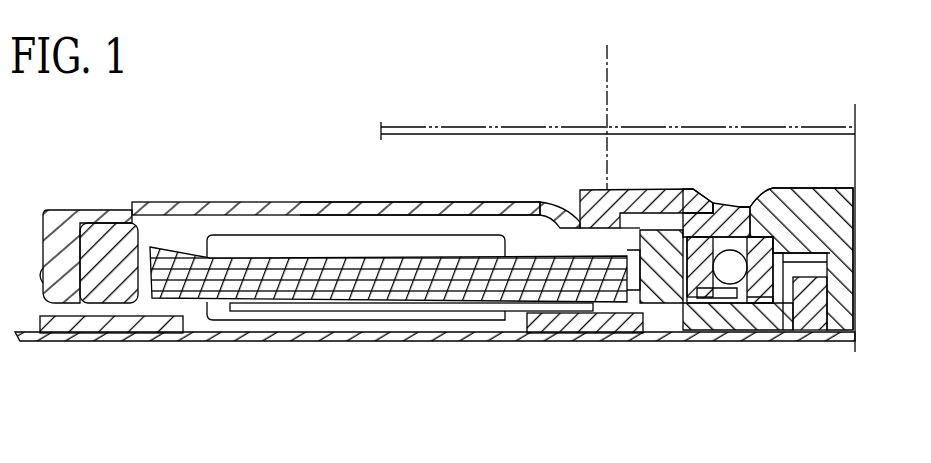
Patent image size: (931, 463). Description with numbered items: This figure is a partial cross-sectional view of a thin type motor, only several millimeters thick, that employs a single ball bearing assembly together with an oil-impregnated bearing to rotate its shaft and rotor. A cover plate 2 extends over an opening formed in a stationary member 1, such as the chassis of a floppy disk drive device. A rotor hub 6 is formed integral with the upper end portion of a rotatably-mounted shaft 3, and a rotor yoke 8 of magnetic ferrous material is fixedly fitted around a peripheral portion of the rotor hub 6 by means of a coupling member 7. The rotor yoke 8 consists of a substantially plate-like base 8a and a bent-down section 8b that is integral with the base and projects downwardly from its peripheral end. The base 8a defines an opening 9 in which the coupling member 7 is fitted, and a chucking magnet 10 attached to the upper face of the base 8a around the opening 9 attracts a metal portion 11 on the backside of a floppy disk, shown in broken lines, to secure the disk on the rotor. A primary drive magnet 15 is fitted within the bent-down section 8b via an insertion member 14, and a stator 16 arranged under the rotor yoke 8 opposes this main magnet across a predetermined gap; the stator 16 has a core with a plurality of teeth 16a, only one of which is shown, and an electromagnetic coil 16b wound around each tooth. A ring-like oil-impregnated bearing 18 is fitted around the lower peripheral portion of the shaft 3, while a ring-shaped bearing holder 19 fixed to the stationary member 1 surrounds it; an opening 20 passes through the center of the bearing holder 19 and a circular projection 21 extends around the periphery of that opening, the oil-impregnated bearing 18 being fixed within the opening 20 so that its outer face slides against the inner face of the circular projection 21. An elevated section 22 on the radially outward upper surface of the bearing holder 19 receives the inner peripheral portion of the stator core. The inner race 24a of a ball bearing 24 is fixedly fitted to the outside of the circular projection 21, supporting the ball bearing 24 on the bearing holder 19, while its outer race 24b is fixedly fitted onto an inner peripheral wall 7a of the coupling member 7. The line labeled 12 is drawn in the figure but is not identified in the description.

The stationary member 1 is at (226, 342).
The cover plate 2 is at (613, 331).
The shaft 3 is at (843, 330).
The rotor hub 6 is at (750, 200).
The coupling member 7 is at (632, 331).
The inner peripheral wall 7a is at (692, 187).
The rotor yoke 8 is at (247, 187).
The base 8a is at (338, 207).
The bent-down section 8b is at (50, 247).
The opening 9 is at (675, 187).
The chucking magnet 10 is at (574, 177).
The metal portion 11 is at (606, 100).
The shaft 12 is at (477, 127).
The insertion member 14 is at (68, 232).
The primary drive magnet 15 is at (100, 294).
The stator 16 is at (201, 232).
The teeth 16a is at (317, 297).
The electromagnetic coil 16b is at (433, 312).
The oil-impregnated bearing 18 is at (803, 330).
The bearing holder 19 is at (735, 320).
The opening 20 is at (820, 187).
The circular projection 21 is at (810, 187).
The elevated section 22 is at (578, 265).
The ball bearing 24 is at (728, 234).
The inner race 24a is at (757, 331).
The outer race 24b is at (670, 331).